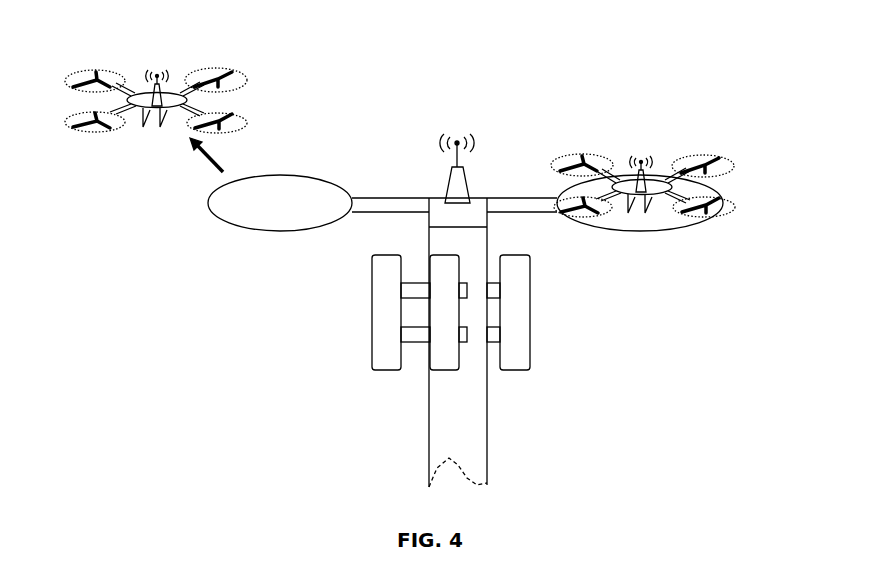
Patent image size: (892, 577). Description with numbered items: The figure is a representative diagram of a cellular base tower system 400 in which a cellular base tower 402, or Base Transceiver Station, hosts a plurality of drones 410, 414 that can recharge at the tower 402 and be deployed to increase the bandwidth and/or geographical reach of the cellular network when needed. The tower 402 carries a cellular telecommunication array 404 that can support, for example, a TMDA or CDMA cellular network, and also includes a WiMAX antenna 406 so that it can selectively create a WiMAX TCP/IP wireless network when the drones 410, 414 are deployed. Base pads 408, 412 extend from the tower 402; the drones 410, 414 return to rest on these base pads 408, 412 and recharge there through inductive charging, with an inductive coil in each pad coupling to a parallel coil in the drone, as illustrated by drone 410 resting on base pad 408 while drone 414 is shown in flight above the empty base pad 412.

The UAV docking/charging station system 400 is at (112, 40).
The cellular base tower 402 is at (487, 420).
The cellular telecommunication array 404 is at (530, 312).
The WiMAX antenna 406 is at (464, 170).
The base pad 408 is at (657, 201).
The drone 410 is at (692, 158).
The base pad 412 is at (262, 232).
The drone 414 is at (160, 128).